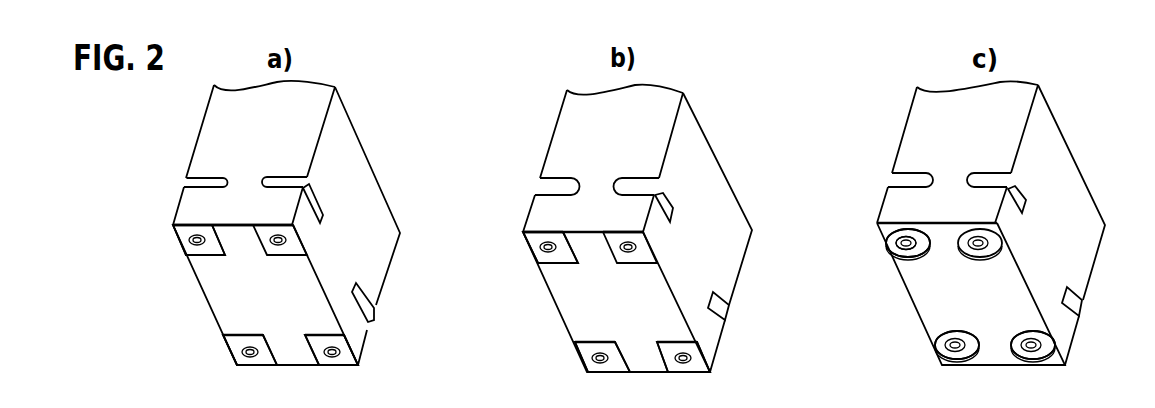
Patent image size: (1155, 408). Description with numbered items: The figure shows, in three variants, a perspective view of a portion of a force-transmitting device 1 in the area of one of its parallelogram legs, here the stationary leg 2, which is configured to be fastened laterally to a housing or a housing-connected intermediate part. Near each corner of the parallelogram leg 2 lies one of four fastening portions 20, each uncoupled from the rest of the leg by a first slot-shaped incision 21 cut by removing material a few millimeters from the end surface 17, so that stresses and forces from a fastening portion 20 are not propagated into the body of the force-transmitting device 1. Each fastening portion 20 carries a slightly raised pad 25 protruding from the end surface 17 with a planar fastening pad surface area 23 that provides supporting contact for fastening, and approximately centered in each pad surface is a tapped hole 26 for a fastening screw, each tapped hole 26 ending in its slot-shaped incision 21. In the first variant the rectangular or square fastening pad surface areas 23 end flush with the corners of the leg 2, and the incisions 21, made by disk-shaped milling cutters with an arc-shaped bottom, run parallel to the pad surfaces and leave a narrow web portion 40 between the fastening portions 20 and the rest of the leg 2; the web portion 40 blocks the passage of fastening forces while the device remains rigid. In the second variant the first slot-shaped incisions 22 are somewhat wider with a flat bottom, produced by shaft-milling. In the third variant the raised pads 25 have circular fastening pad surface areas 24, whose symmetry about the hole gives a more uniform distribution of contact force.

The force-transmitting device 1 is at (345, 75).
The stationary leg 2 is at (264, 147).
The end surface 17 is at (233, 295).
The fastening portion 20 is at (175, 249).
The first slot-shaped incision 21 is at (203, 185).
The first slot-shaped incision 22 is at (558, 187).
The fastening pad surface area 23 is at (184, 236).
The circular fastening pad surface area 24 is at (887, 233).
The raised pad 25 is at (203, 258).
The tapped hole 26 is at (197, 247).
The web portion 40 is at (245, 180).